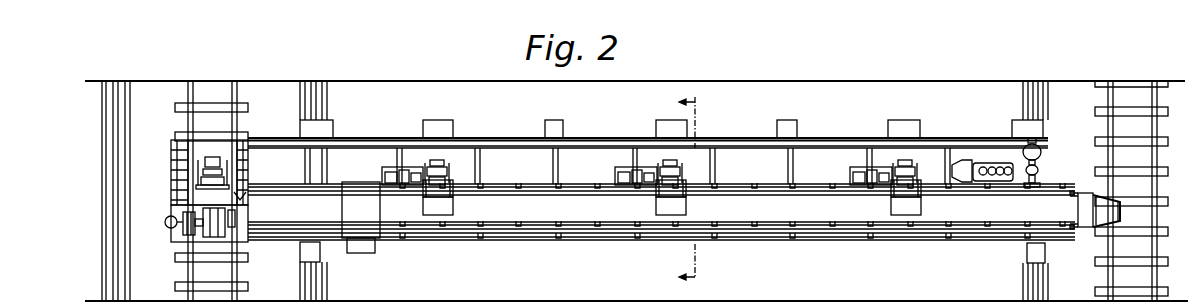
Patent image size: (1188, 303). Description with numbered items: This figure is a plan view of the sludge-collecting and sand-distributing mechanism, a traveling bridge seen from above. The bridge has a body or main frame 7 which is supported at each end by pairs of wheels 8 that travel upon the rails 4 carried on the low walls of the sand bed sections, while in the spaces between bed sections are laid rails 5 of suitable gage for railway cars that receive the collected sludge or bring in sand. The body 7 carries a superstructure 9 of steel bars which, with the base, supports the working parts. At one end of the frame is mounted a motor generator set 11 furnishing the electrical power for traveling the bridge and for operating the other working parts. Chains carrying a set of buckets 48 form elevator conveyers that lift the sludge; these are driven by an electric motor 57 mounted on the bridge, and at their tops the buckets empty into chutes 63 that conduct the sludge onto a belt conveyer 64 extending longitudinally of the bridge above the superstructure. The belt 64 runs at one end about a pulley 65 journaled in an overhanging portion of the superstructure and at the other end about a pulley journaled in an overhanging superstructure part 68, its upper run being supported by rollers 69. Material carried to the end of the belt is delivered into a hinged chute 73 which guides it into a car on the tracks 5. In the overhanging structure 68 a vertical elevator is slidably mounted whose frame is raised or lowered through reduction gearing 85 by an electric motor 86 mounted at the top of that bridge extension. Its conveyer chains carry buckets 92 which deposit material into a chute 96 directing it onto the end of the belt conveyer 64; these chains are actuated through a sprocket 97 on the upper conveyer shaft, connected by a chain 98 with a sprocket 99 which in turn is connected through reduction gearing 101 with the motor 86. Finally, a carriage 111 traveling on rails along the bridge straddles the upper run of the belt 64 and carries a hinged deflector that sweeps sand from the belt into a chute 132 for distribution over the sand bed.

The rails 4 is at (113, 110).
The rails 5 is at (232, 94).
The body or main frame 7 is at (300, 252).
The wheels 8 is at (693, 189).
The superstructure 9 is at (820, 258).
The motor generator set 11 is at (974, 158).
The buckets 48 is at (440, 162).
The electric motor 57 is at (632, 175).
The chute 63 is at (453, 207).
The belt conveyer 64 is at (661, 200).
The pulley 65 is at (1080, 193).
The overhanging superstructure part 68 is at (172, 192).
The rollers 69 is at (515, 227).
The chute 73 is at (1092, 230).
The reduction gearing 85 is at (220, 232).
The electric motor 86 is at (170, 226).
The buckets 92 is at (200, 178).
The chute 96 is at (240, 198).
The sprocket 97 is at (202, 160).
The chain 98 is at (178, 210).
The sprocket 99 is at (197, 235).
The reduction gearing 101 is at (187, 232).
The carriage 111 is at (347, 240).
The chute 132 is at (368, 254).